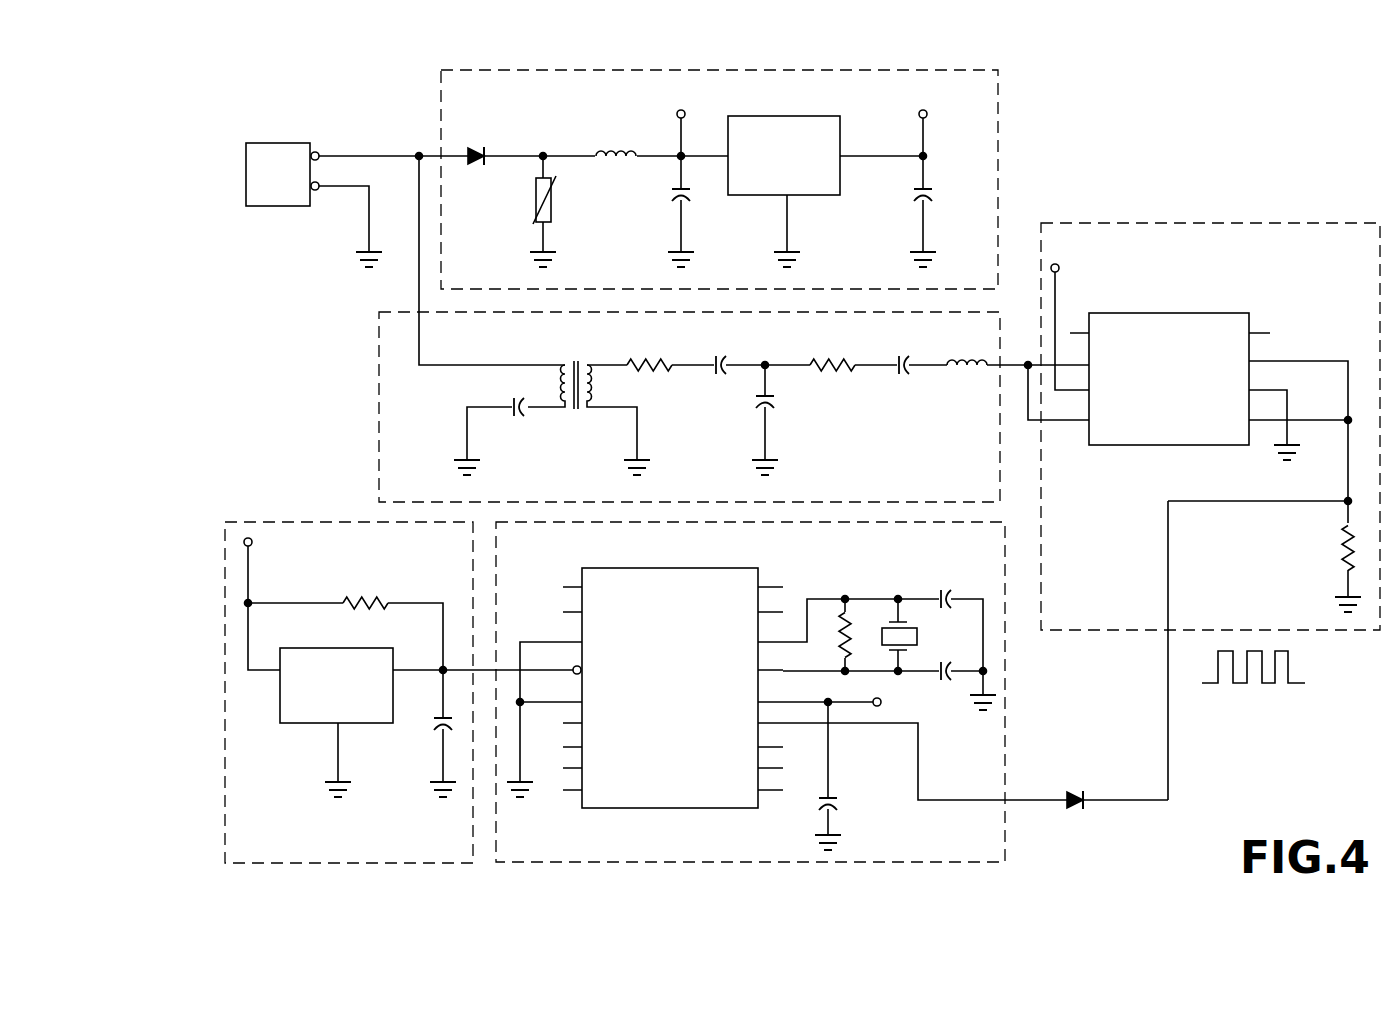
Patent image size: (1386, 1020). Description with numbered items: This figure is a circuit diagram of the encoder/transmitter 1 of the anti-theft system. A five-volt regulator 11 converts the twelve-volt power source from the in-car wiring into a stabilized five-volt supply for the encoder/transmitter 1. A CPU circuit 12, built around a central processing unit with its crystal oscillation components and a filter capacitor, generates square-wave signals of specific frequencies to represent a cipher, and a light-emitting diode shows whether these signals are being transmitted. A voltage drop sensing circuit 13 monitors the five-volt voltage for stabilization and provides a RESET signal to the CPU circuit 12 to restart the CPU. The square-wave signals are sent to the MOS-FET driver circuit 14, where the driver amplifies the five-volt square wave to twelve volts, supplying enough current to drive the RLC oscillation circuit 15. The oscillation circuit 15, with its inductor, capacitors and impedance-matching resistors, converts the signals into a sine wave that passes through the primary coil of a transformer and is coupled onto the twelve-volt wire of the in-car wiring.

The encoder/transmitter 1 is at (313, 310).
The 5V regulator 11 is at (980, 124).
The CPU circuit 12 is at (1002, 827).
The voltage drop sensing circuit 13 is at (258, 850).
The MOS-FET driver circuit 14 is at (1272, 245).
The RLC oscillation circuit 15 is at (397, 394).